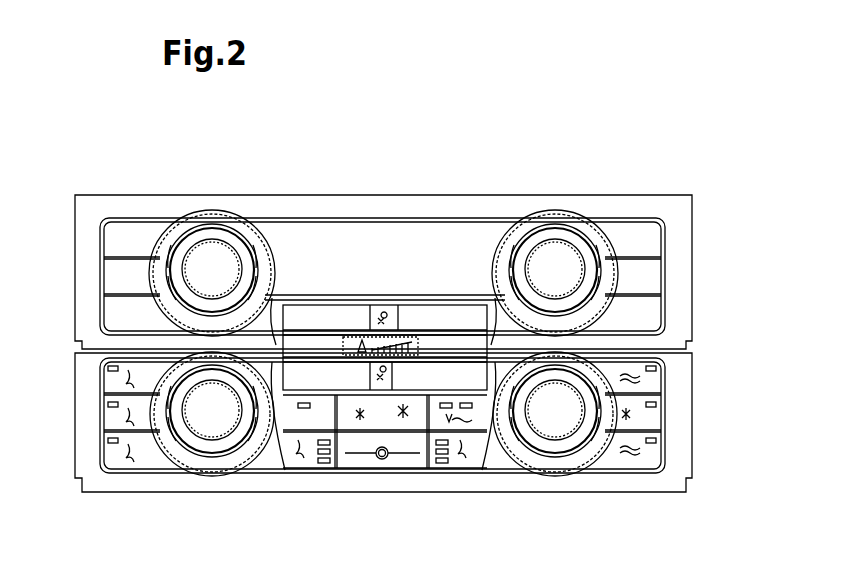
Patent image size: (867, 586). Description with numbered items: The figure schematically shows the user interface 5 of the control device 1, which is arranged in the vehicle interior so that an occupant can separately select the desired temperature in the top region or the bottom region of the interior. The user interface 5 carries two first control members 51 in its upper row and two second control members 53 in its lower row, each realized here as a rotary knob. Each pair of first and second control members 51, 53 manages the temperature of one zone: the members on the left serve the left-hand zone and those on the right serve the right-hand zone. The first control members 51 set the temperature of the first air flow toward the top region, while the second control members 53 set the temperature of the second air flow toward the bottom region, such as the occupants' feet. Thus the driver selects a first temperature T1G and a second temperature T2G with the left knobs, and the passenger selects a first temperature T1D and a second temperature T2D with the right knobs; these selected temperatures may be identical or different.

The control device 1 is at (606, 147).
The user interface 5 is at (92, 212).
The first control member 51 is at (208, 262).
The second control member 53 is at (205, 410).
The first temperature T1G is at (318, 318).
The first temperature T1D is at (452, 318).
The second temperature T2G is at (284, 370).
The second temperature T2D is at (487, 372).